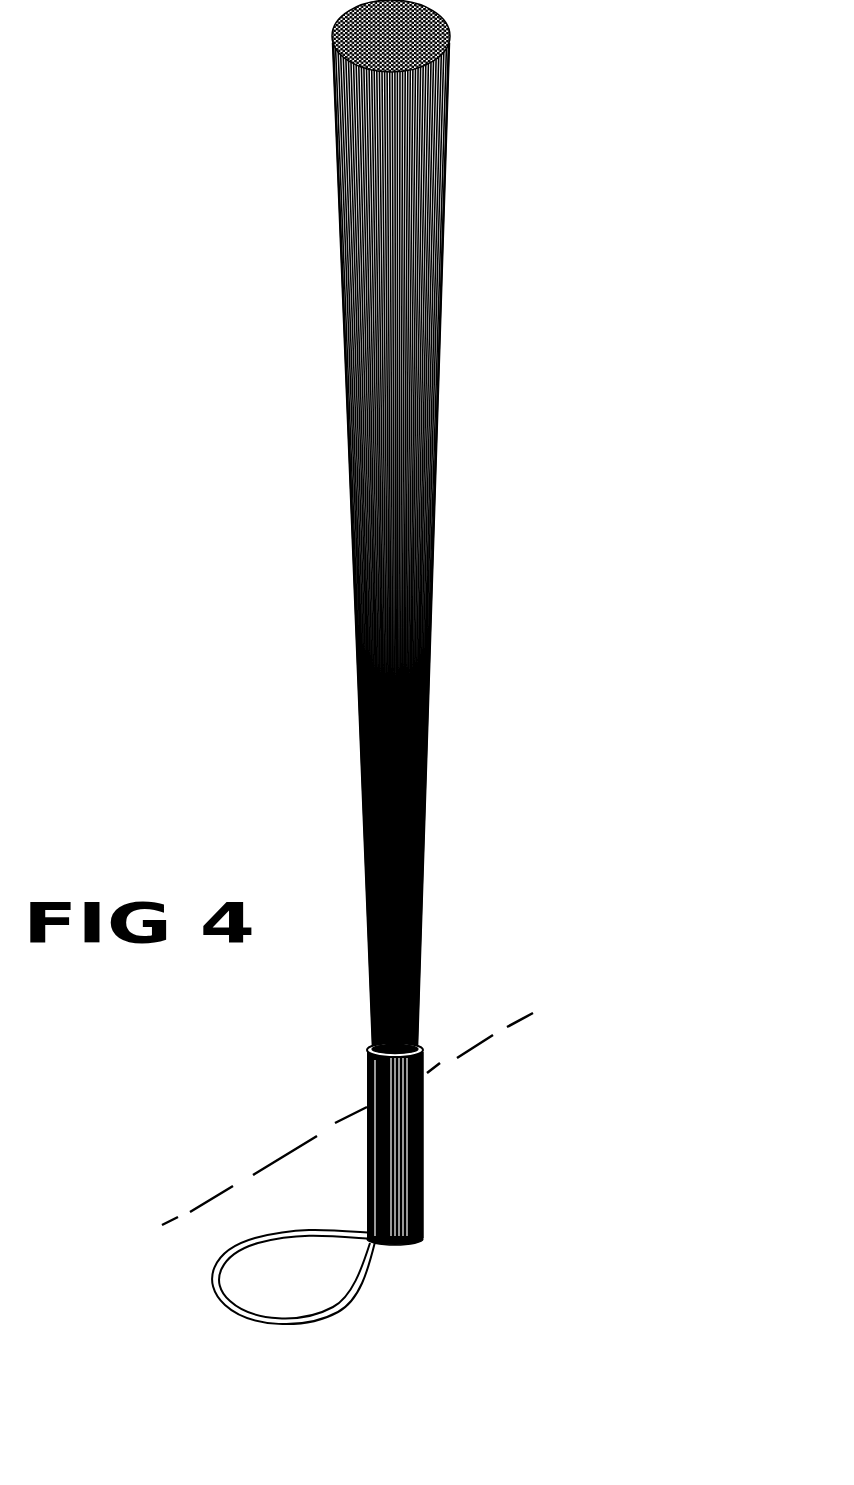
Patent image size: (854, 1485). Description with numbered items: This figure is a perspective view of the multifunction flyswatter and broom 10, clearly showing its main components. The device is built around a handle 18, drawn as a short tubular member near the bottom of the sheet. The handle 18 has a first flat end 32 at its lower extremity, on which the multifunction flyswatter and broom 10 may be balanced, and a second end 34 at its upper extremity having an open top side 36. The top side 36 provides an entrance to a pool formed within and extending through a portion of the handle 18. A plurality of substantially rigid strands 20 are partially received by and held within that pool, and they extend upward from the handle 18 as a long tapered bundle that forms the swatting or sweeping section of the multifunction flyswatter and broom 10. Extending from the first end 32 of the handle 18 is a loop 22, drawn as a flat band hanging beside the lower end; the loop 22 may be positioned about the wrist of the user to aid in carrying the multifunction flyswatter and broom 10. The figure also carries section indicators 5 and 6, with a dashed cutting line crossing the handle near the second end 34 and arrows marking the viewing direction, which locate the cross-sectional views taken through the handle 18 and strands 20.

The multifunction flyswatter and broom 10 is at (318, 431).
The plurality of substantially rigid strands 20 is at (447, 160).
The handle 18 is at (422, 1170).
The open top side 36 is at (423, 1044).
The second end 34 is at (422, 1077).
The first flat end 32 is at (403, 1243).
The loop 22 is at (350, 1290).
The section line 5- 5 is at (519, 1007).
The section line 6- 6 is at (488, 1062).